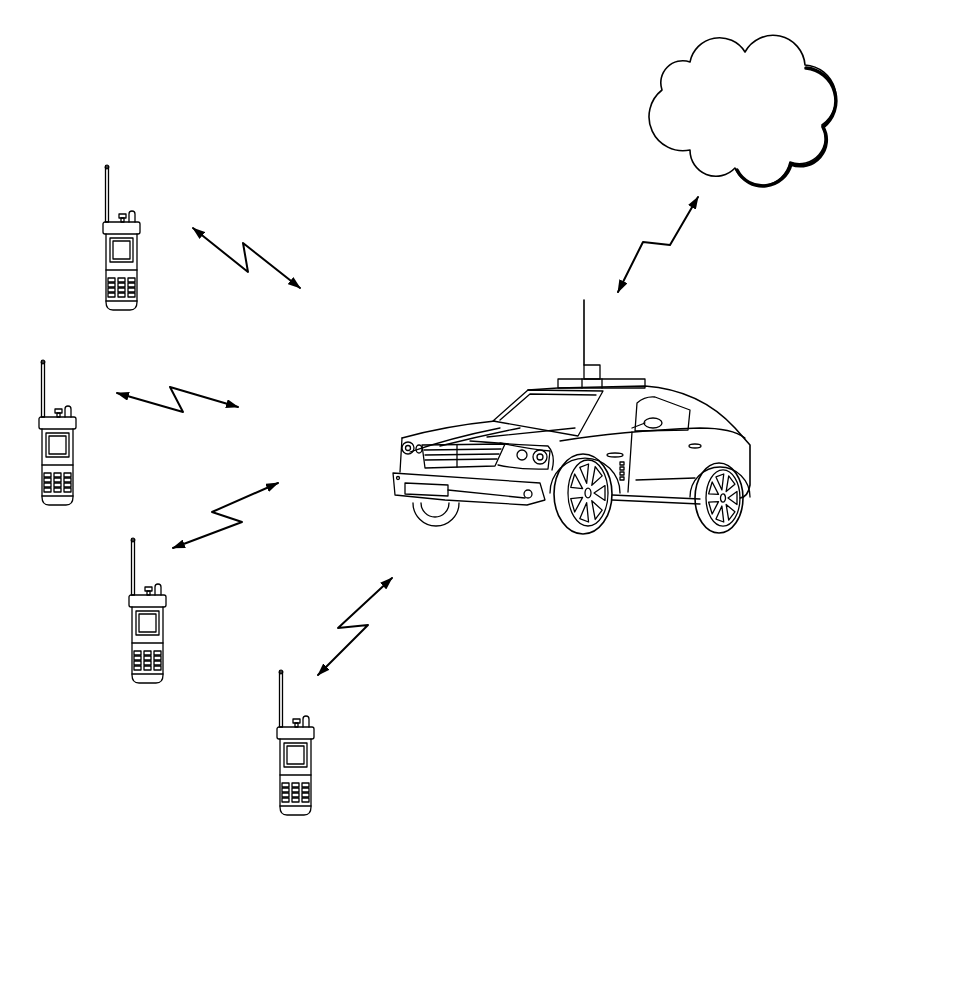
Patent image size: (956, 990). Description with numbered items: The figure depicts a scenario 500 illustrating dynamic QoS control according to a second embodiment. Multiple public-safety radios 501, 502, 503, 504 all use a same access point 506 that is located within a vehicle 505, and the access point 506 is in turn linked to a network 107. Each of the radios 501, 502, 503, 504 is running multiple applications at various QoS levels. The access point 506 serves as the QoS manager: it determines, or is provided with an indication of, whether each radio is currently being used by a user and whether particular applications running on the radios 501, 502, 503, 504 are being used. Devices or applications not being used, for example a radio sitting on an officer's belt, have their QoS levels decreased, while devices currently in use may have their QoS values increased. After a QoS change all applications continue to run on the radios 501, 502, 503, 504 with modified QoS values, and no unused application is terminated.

The communication system 500 is at (120, 42).
The network 107 is at (680, 62).
The public-safety radio 501 is at (147, 272).
The public-safety radio 502 is at (80, 466).
The public-safety radio 503 is at (170, 645).
The public-safety radio 504 is at (318, 775).
The vehicle 505 is at (436, 425).
The access point 506 is at (603, 370).